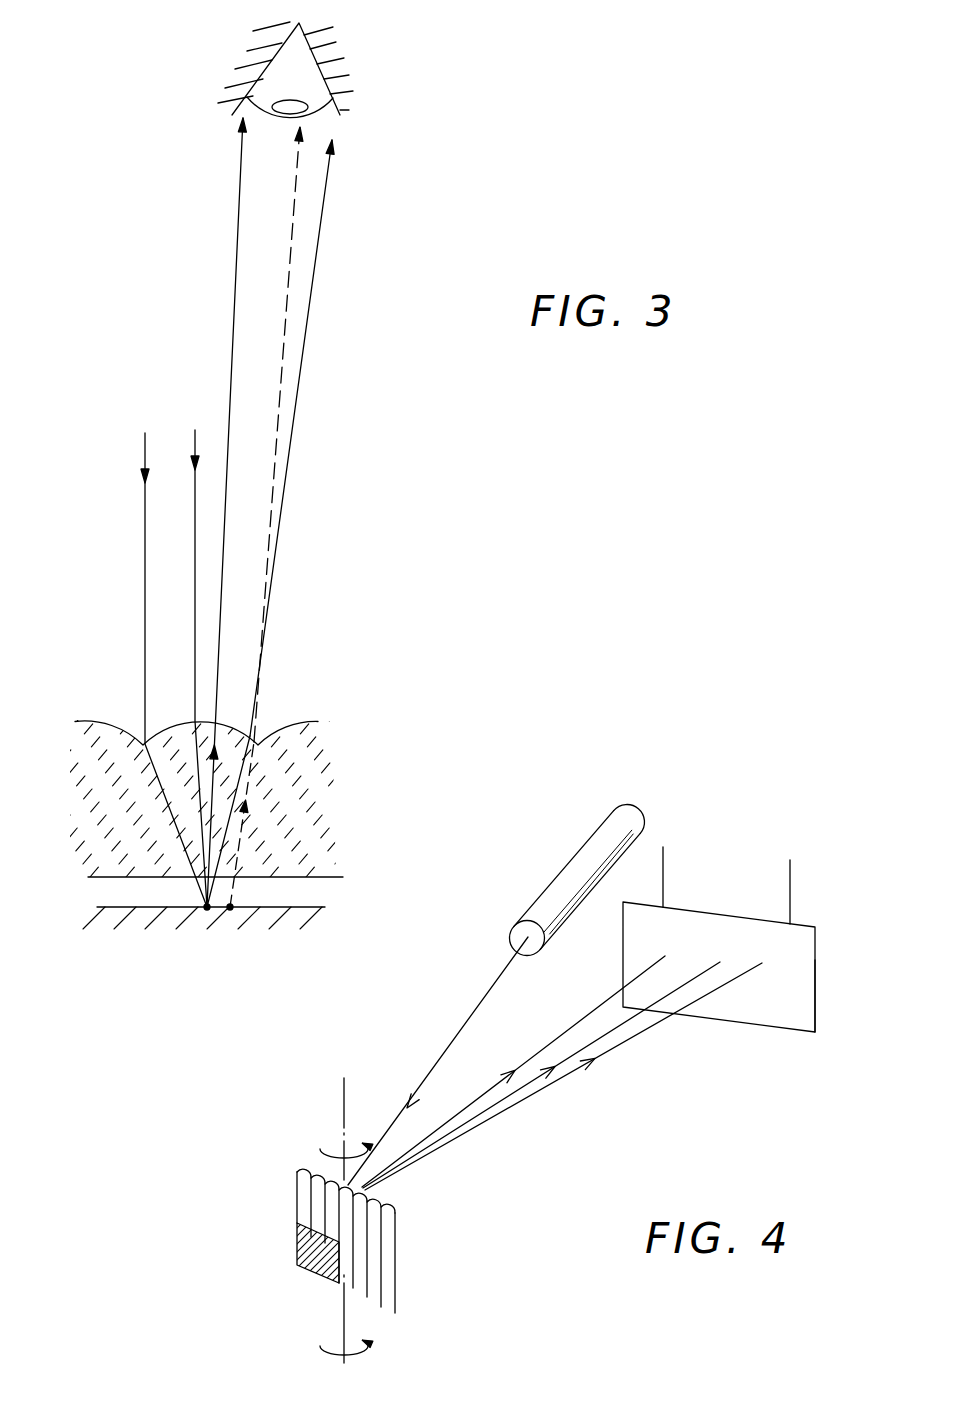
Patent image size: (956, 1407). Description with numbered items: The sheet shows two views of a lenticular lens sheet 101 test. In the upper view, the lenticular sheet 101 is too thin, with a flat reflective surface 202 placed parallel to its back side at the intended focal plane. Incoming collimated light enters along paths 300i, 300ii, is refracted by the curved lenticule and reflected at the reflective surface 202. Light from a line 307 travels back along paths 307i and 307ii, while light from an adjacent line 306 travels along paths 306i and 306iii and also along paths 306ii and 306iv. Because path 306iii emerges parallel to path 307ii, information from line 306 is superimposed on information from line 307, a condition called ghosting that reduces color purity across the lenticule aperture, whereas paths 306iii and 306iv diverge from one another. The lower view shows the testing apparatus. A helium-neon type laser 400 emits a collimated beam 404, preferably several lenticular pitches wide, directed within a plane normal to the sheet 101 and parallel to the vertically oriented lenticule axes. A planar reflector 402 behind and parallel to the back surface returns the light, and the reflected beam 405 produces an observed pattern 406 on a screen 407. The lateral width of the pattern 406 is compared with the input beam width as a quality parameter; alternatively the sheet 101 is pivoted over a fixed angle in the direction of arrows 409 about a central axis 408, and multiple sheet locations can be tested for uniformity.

In FIG. 3, the lenticular sheet 101 is at (118, 795).
In FIG. 4, the lenticular sheet 101 is at (406, 1221).
In FIG. 3, the flat reflective surface 202 is at (122, 921).
In FIG. 3, the incoming light path 300i is at (145, 503).
In FIG. 3, the incoming light path 300ii is at (195, 430).
In FIG. 3, the line 306 is at (207, 912).
In FIG. 3, the path 306i is at (215, 772).
In FIG. 3, the path 306ii is at (243, 788).
In FIG. 3, the path 306iii is at (235, 308).
In FIG. 3, the path 306iv is at (308, 330).
In FIG. 3, the line 307 is at (230, 912).
In FIG. 3, the path 307i is at (240, 860).
In FIG. 3, the path 307ii is at (275, 502).
In FIG. 4, the laser 400 is at (578, 858).
In FIG. 4, the planar reflector 402 is at (302, 1245).
In FIG. 4, the collimated beam 404 is at (447, 1053).
In FIG. 4, the reflected beam 405 is at (533, 1083).
In FIG. 4, the observed pattern 406 is at (693, 948).
In FIG. 4, the screen 407 is at (817, 1000).
In FIG. 4, the central axis 408 is at (344, 1095).
In FIG. 4, the arrows 409 is at (320, 1149).